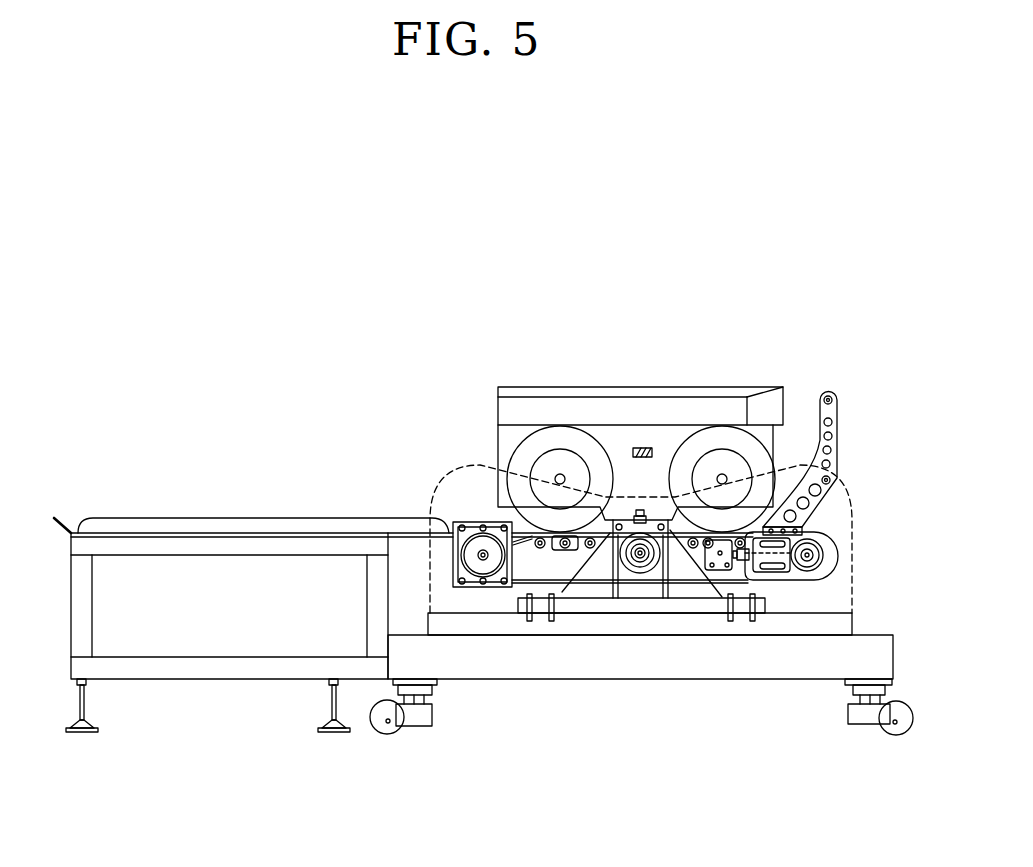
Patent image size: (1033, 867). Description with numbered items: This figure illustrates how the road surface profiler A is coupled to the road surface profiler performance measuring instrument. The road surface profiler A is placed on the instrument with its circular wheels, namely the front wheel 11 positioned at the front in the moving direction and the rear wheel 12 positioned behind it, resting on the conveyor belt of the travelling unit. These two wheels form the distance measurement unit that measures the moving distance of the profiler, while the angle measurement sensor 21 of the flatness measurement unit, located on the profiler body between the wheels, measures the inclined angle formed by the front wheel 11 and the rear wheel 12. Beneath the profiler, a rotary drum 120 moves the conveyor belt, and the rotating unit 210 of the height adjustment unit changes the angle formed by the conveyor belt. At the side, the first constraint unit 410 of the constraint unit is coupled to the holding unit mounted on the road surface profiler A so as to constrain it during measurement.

The road surface profiler A is at (680, 390).
The front wheel 11 is at (718, 440).
The rear wheel 12 is at (557, 441).
The angle measurement sensor 21 is at (640, 448).
The rotary drum 120 is at (483, 540).
The rotating unit 210 is at (640, 588).
The first constraint unit 410 is at (831, 440).